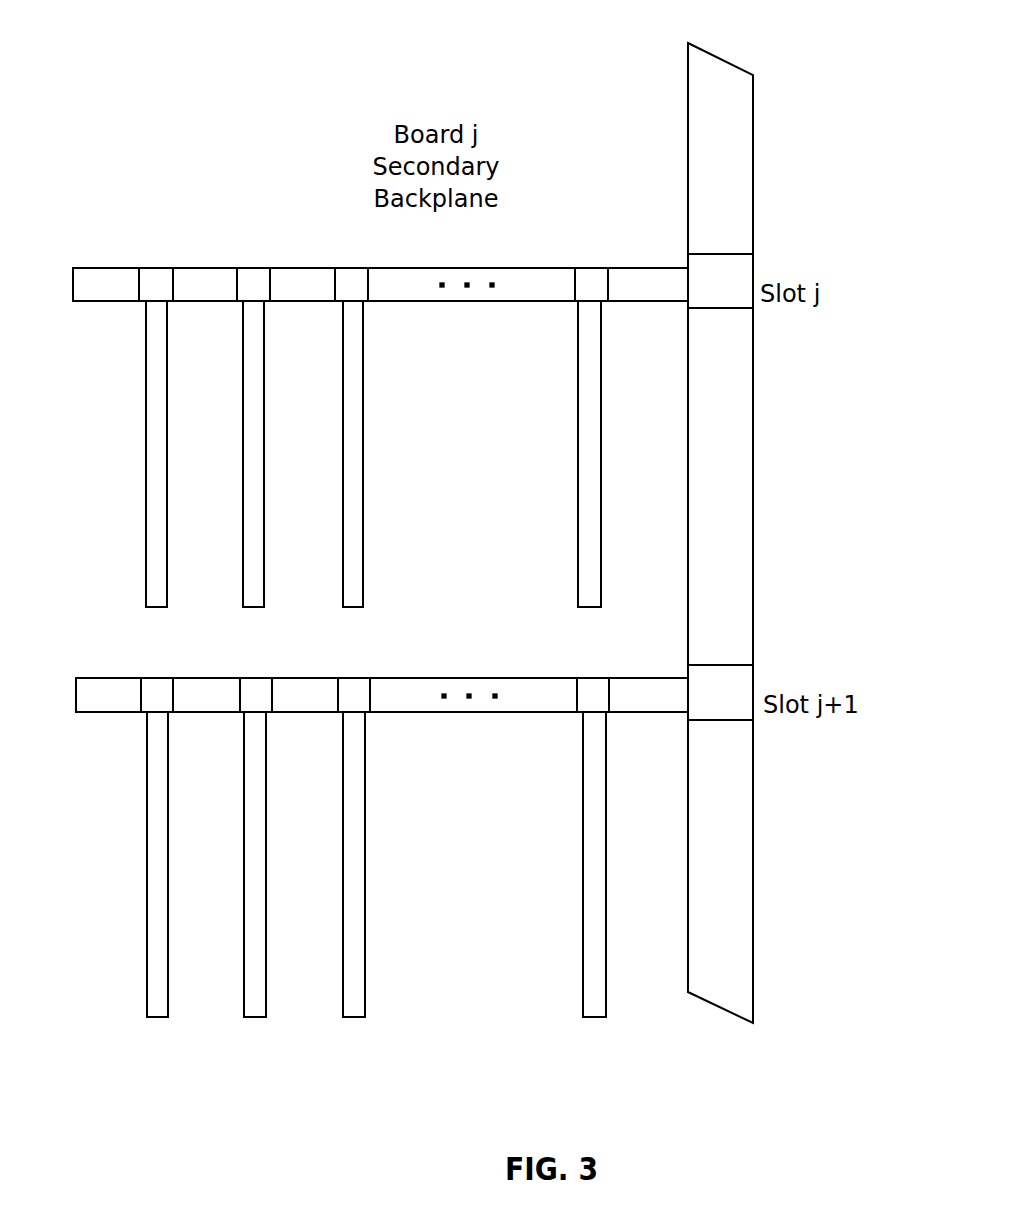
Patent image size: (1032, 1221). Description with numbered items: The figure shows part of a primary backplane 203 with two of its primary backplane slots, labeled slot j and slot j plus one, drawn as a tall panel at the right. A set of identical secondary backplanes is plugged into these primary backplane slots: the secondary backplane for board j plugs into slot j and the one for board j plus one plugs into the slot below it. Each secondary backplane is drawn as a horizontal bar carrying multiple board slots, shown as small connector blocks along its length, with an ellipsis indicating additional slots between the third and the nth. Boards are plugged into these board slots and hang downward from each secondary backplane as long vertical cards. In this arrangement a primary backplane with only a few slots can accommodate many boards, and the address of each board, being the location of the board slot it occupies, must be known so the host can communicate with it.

The primary backplane 203 is at (685, 98).